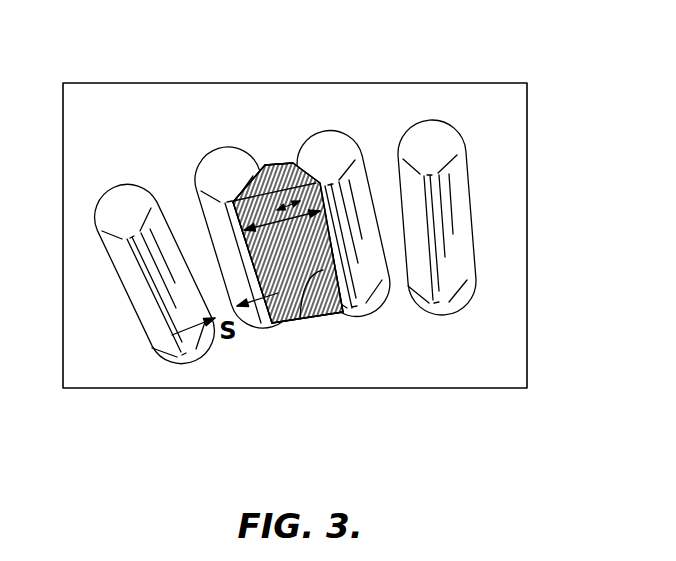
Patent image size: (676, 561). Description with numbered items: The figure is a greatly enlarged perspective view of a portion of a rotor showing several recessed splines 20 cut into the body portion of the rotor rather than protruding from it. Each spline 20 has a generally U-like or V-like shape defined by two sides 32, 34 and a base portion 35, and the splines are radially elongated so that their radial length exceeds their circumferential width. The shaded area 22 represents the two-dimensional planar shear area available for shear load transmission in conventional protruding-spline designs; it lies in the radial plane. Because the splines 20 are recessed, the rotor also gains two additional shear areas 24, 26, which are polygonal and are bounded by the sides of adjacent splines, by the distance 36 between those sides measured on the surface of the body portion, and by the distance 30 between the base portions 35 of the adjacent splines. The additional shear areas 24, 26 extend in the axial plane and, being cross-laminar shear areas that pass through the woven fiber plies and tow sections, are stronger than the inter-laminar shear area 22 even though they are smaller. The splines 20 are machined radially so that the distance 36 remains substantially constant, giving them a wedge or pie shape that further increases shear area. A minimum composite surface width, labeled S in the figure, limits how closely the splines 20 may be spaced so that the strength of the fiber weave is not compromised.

The recessed spline 20 is at (464, 133).
The shear area 22 is at (302, 234).
The additional shear area 24 is at (263, 170).
The additional shear area 26 is at (303, 320).
The distance between base portions 30 is at (325, 320).
The side 32 is at (323, 270).
The side 34 is at (287, 322).
The base portion 35 is at (278, 290).
The distance between sides of adjacent splines 36 is at (280, 165).